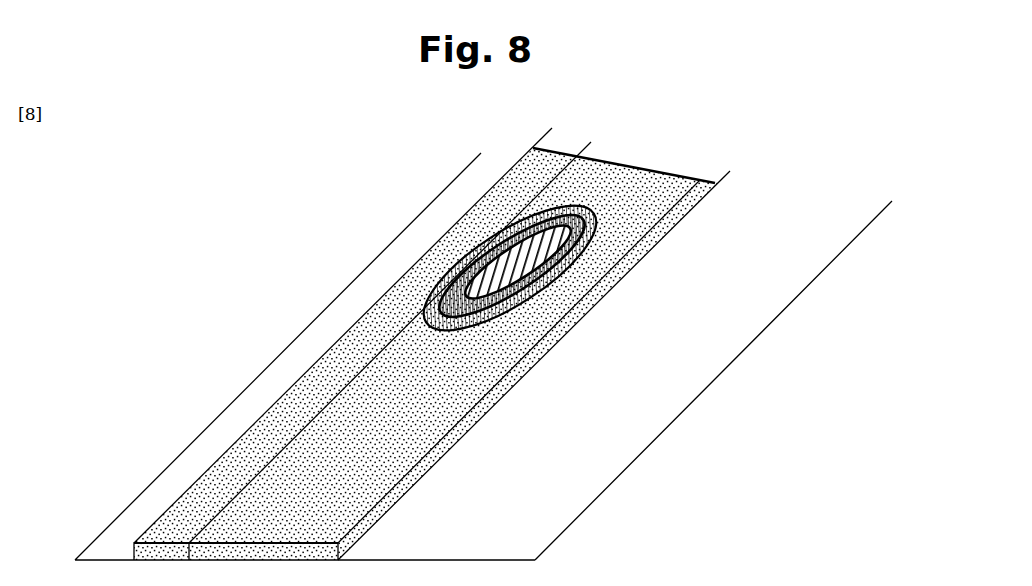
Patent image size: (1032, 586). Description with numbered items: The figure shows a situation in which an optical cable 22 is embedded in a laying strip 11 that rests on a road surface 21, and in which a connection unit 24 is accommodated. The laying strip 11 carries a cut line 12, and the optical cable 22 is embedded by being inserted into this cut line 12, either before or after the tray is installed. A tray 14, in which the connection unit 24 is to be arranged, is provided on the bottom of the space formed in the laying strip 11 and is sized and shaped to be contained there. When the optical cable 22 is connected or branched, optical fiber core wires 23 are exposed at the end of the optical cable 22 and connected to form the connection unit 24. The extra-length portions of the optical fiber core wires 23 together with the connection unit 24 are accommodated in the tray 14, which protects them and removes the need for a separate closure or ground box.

The laying strip 11 is at (224, 448).
The cut line 12 is at (383, 343).
The tray 14 is at (577, 207).
The road surface 21 is at (110, 520).
The optical cable 22 is at (343, 383).
The optical fiber core wire 23 is at (560, 297).
The connection unit 24 is at (570, 259).